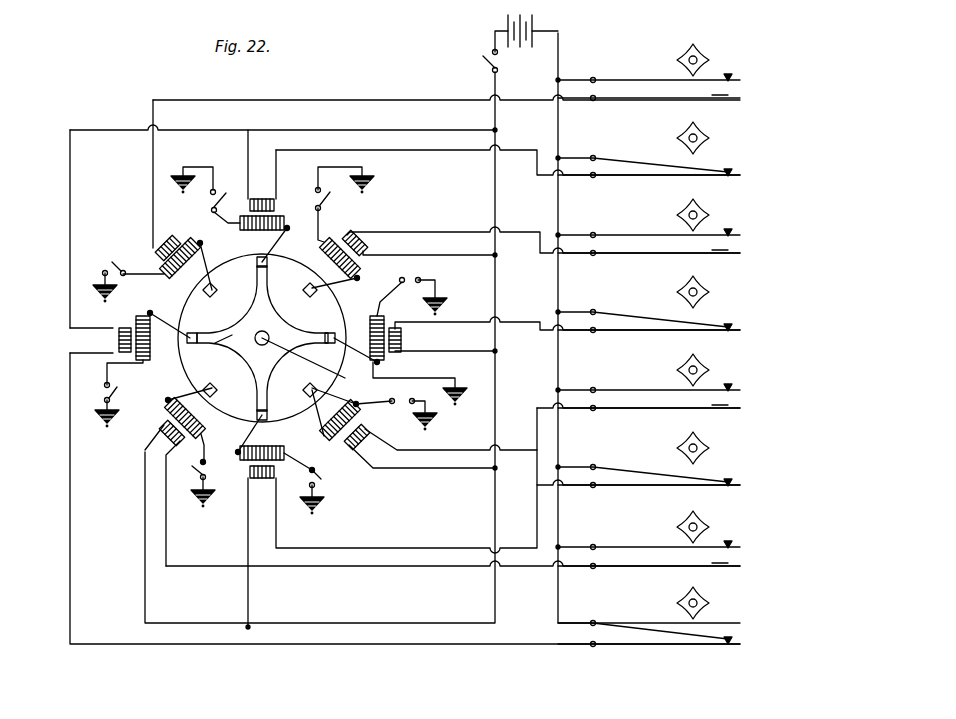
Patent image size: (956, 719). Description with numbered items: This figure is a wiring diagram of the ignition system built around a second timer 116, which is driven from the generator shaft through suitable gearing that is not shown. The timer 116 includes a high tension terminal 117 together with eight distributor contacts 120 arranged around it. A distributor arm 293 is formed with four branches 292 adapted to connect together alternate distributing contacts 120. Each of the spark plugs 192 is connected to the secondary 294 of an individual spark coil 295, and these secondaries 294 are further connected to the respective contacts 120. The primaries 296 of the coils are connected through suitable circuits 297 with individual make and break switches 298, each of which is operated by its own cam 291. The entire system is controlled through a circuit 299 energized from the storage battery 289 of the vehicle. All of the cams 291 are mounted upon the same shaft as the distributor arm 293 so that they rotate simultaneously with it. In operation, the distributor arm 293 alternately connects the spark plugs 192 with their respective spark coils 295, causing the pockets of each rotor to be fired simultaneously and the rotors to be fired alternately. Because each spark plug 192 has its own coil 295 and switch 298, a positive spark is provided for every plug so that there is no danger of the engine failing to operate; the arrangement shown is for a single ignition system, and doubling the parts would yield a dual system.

The timer 116 is at (235, 270).
The high tension terminal 117 is at (258, 345).
The distributor contacts 120 is at (208, 388).
The spark plugs 192 is at (240, 190).
The storage battery 289 is at (505, 28).
The cam 291 is at (678, 138).
The branches 292 is at (210, 338).
The distributor arm 293 is at (217, 350).
The secondary 294 is at (205, 232).
The spark coils 295 is at (168, 250).
The primaries 296 is at (162, 240).
The circuits 297 is at (458, 150).
The make and break switches 298 is at (712, 95).
The circuit 299 is at (557, 78).